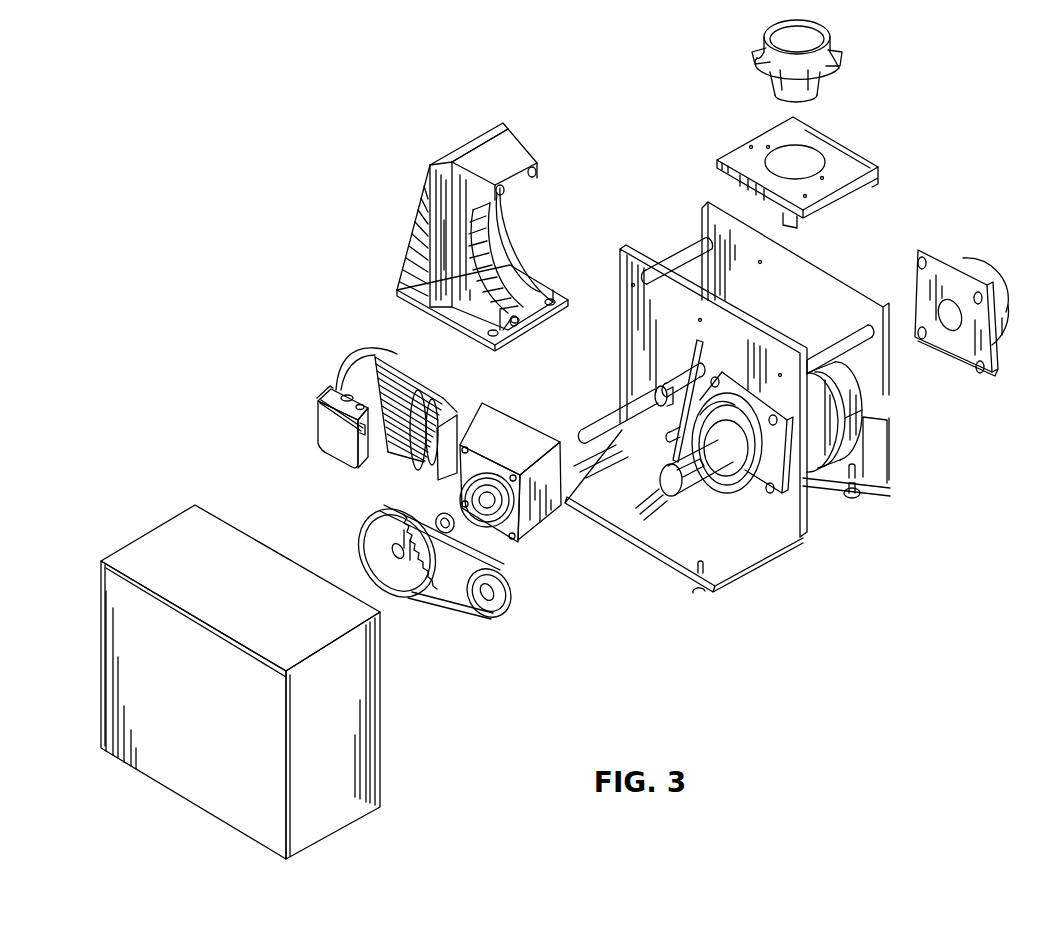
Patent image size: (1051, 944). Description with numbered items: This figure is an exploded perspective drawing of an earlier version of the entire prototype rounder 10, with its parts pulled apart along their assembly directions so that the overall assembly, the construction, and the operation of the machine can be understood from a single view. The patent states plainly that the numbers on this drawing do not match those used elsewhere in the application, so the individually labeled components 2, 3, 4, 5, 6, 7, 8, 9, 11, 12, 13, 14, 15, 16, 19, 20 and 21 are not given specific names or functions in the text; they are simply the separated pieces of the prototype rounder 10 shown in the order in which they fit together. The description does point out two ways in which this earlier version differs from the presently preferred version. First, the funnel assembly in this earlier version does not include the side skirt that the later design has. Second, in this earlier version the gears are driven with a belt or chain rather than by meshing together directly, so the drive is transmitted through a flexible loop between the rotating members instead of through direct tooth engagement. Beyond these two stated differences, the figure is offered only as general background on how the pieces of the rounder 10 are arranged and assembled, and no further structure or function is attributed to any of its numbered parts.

The cup-shaped bearing retainer 2 is at (836, 68).
The support bracket 3 is at (473, 218).
The hole 4 is at (825, 158).
The cover plate 5 is at (839, 172).
The housing 6 is at (193, 505).
The roller 7 is at (857, 460).
The frame 8 is at (886, 484).
The rod 9 is at (878, 372).
The prototype rounder 10 is at (698, 480).
The upright plate 11 is at (468, 150).
The rod 12 is at (605, 410).
The flange plate 13 is at (1005, 318).
The bolt 14 is at (853, 500).
The small pulley 15 is at (495, 604).
The sprocket 16 is at (418, 593).
The bearing flange 19 is at (728, 483).
The belt 20 is at (514, 601).
The motor 21 is at (320, 388).